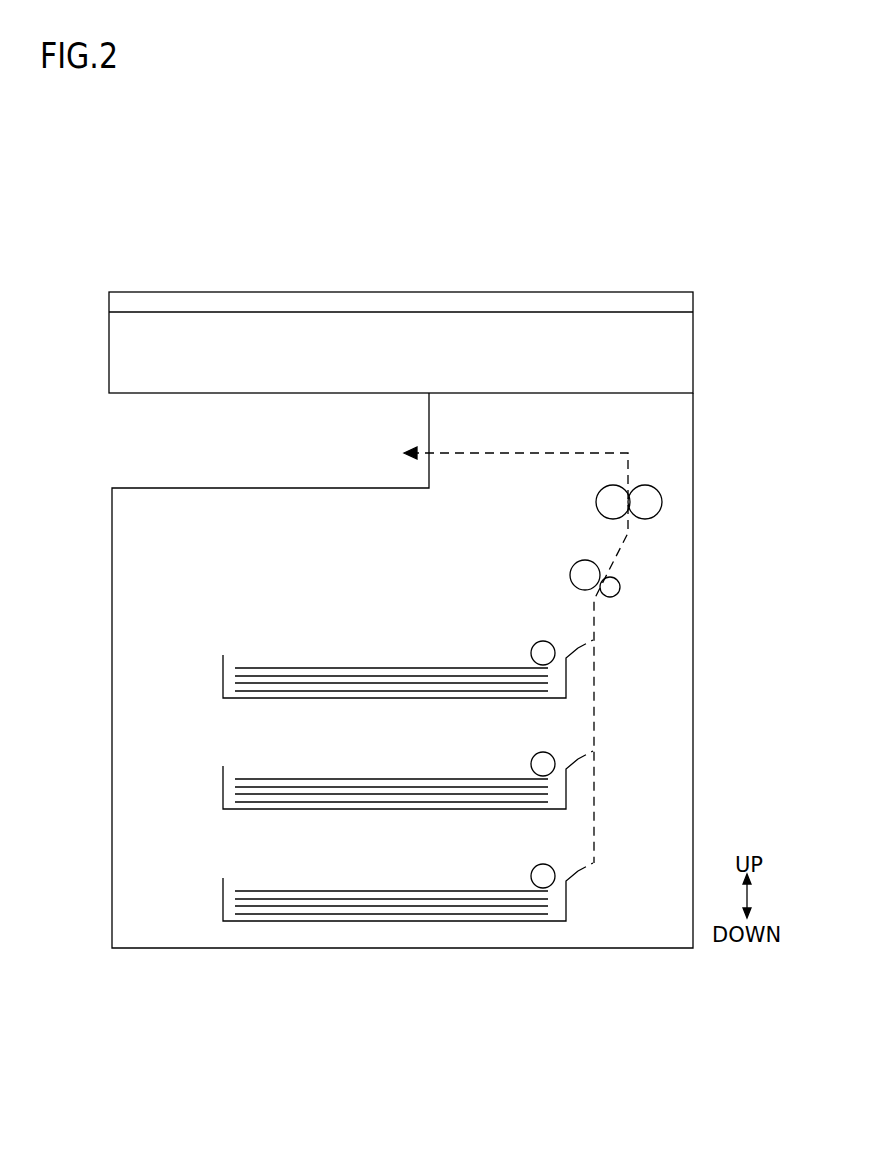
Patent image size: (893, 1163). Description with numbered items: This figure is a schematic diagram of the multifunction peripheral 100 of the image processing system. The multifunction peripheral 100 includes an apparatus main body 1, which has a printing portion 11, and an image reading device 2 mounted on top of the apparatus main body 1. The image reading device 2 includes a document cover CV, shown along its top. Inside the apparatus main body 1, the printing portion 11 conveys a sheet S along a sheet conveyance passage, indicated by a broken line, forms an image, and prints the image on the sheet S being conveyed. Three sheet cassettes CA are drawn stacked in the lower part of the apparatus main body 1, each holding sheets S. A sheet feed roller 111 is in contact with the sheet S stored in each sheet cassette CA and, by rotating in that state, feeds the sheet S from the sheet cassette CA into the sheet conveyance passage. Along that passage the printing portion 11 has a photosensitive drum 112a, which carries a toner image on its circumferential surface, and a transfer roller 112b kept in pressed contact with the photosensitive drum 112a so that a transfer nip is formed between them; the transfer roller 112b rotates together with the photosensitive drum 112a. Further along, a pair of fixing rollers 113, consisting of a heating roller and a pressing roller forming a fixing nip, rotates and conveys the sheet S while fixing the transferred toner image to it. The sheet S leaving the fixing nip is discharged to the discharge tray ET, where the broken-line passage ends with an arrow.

The multifunction peripheral 100 is at (650, 256).
The image reading device 2 is at (696, 329).
The apparatus main body 1 is at (696, 421).
The document cover CV is at (328, 292).
The discharge tray ET is at (345, 487).
The printing portion 11 is at (476, 561).
The pair of fixing rollers 113 is at (600, 502).
The photosensitive drum 112a is at (585, 567).
The transfer roller 112b is at (610, 592).
The sheet feed roller 111 is at (543, 647).
The sheet cassette CA is at (222, 673).
The sheet S is at (313, 665).